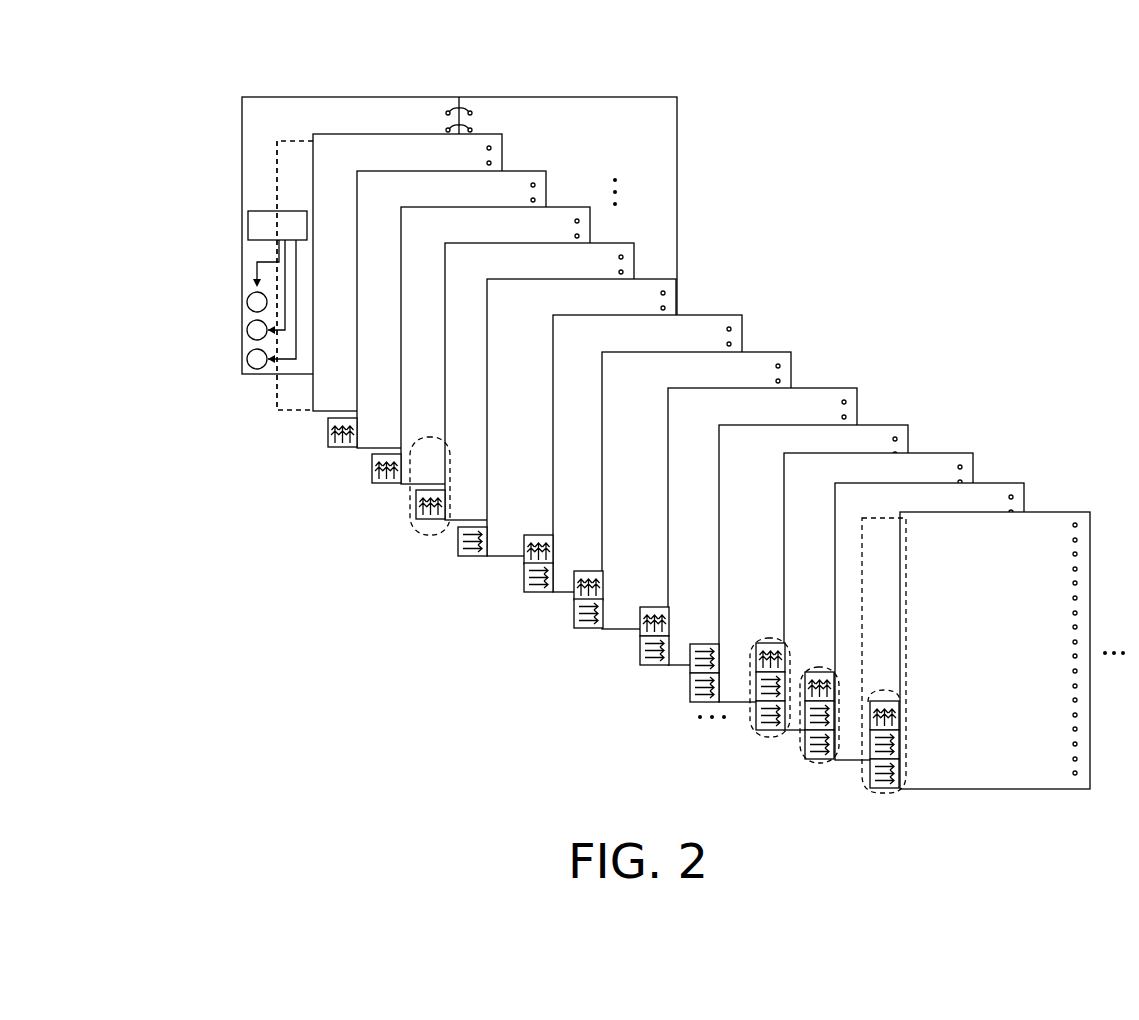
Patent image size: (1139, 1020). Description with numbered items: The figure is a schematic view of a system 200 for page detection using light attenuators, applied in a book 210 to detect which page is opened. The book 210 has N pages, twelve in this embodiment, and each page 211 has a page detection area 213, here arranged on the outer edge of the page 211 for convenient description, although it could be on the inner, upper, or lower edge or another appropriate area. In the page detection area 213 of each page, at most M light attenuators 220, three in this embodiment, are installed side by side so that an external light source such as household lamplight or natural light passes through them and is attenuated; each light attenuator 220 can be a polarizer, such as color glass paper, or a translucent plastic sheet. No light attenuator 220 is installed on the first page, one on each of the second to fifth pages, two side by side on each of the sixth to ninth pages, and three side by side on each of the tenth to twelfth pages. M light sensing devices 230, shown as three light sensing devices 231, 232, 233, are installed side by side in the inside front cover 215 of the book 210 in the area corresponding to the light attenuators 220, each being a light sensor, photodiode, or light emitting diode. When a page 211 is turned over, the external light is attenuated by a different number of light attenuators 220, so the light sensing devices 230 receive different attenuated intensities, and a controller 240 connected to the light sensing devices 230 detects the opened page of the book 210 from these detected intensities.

The system for page detection 200 is at (626, 454).
The book 210 is at (677, 236).
The page 211 is at (547, 178).
The page detection area 213 is at (277, 181).
The inside front cover 215 is at (263, 155).
The light attenuators 220 is at (428, 535).
The light sensing devices 230 is at (197, 331).
The first light sensing device 231 is at (225, 360).
The second light sensing device 232 is at (247, 330).
The third light sensing device 233 is at (247, 302).
The controller 240 is at (248, 226).